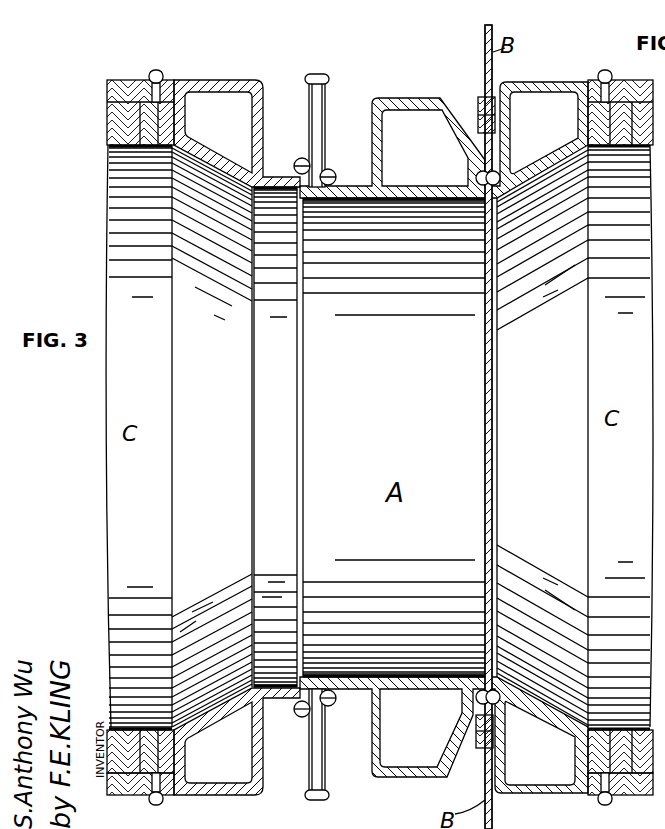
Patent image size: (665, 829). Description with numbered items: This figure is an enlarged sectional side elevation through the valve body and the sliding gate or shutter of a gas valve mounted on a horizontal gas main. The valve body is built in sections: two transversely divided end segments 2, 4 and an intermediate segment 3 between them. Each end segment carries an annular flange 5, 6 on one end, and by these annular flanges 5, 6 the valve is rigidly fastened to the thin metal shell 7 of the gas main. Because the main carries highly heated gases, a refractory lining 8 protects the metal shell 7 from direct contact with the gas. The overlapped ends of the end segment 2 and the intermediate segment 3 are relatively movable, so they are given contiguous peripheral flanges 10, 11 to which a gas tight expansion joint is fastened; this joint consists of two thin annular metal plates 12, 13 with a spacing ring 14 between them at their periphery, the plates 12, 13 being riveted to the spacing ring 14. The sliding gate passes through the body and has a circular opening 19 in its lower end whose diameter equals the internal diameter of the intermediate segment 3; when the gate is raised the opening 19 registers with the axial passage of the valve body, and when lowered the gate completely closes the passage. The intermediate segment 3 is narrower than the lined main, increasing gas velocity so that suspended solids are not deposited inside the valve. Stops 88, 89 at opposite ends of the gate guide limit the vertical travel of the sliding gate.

The end segment 2 is at (232, 793).
The intermediate segment 3 is at (425, 778).
The end segment 4 is at (548, 793).
The annular flange 5 is at (150, 797).
The annular flange 6 is at (608, 797).
The metal shell 7 is at (127, 797).
The refractory lining 8 is at (145, 748).
The peripheral flange 10 is at (300, 715).
The peripheral flange 11 is at (332, 705).
The annular metal plate 12 is at (306, 762).
The annular metal plate 13 is at (323, 760).
The spacing ring 14 is at (314, 801).
The circular opening 19 is at (487, 430).
The stop 88 is at (478, 100).
The stop 89 is at (478, 750).